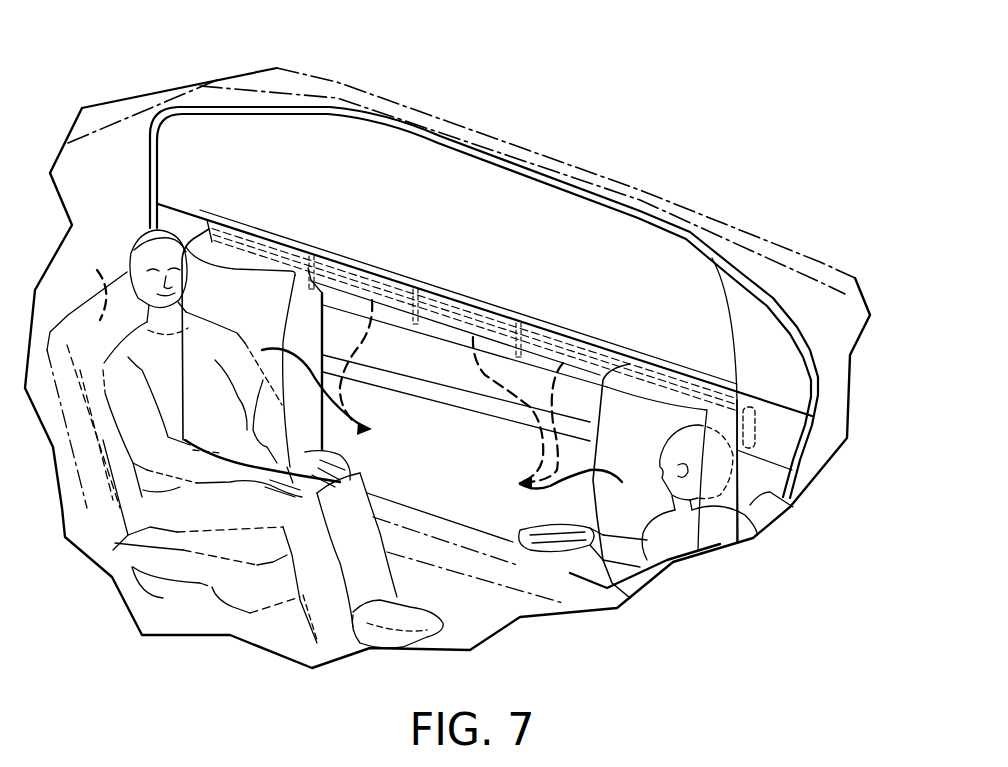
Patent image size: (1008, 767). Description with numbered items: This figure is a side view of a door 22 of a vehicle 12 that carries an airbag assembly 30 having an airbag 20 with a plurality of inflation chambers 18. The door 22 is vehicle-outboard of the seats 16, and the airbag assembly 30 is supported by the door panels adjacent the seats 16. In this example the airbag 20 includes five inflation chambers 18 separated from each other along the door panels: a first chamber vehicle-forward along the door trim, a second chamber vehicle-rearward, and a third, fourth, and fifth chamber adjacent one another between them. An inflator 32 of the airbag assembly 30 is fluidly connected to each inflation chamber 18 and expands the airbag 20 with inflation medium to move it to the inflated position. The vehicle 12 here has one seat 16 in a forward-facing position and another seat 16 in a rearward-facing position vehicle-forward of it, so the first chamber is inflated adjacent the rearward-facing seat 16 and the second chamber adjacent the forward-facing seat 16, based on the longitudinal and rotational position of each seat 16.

The vehicle 12 is at (161, 72).
The seat 16 is at (97, 272).
The inflation chambers 18 is at (442, 399).
The airbag 20 is at (276, 236).
The door 22 is at (377, 130).
The airbag assembly 30 is at (445, 343).
The inflator 32 is at (756, 423).